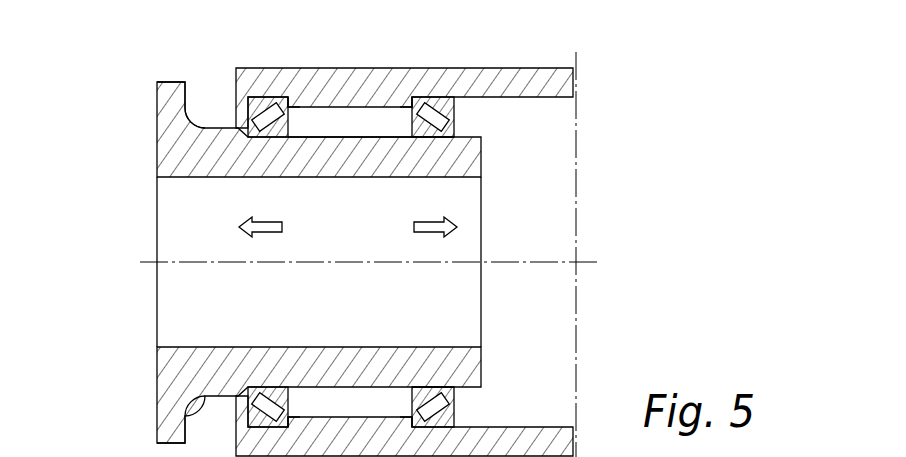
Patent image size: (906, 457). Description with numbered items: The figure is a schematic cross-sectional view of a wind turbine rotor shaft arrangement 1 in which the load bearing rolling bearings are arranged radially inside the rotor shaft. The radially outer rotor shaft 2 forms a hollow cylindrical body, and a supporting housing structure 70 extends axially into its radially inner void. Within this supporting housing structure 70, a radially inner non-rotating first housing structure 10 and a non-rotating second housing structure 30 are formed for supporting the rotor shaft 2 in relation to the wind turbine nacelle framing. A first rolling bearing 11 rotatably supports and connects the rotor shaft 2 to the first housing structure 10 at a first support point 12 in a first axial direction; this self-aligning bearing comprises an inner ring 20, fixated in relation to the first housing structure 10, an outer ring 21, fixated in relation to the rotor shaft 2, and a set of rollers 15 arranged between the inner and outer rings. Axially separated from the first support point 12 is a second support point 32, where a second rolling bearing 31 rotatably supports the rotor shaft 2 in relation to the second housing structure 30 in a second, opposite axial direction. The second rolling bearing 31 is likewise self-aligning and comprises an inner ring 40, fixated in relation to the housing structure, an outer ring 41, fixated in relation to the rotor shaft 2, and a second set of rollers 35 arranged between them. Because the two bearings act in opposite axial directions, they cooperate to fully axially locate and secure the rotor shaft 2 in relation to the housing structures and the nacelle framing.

The wind turbine rotor shaft arrangement 1 is at (110, 67).
The rotor shaft 2 is at (503, 83).
The first housing structure 10 is at (255, 140).
The first rolling bearing 11 is at (301, 115).
The first support point 12 is at (273, 63).
The rollers 15 is at (263, 115).
The inner ring 20 is at (272, 140).
The outer ring 21 is at (260, 100).
The second housing structure 30 is at (425, 140).
The second rolling bearing 31 is at (395, 115).
The second support point 32 is at (443, 63).
The rollers 35 is at (437, 112).
The inner ring 40 is at (438, 135).
The outer ring 41 is at (430, 100).
The supporting housing structure 70 is at (170, 148).